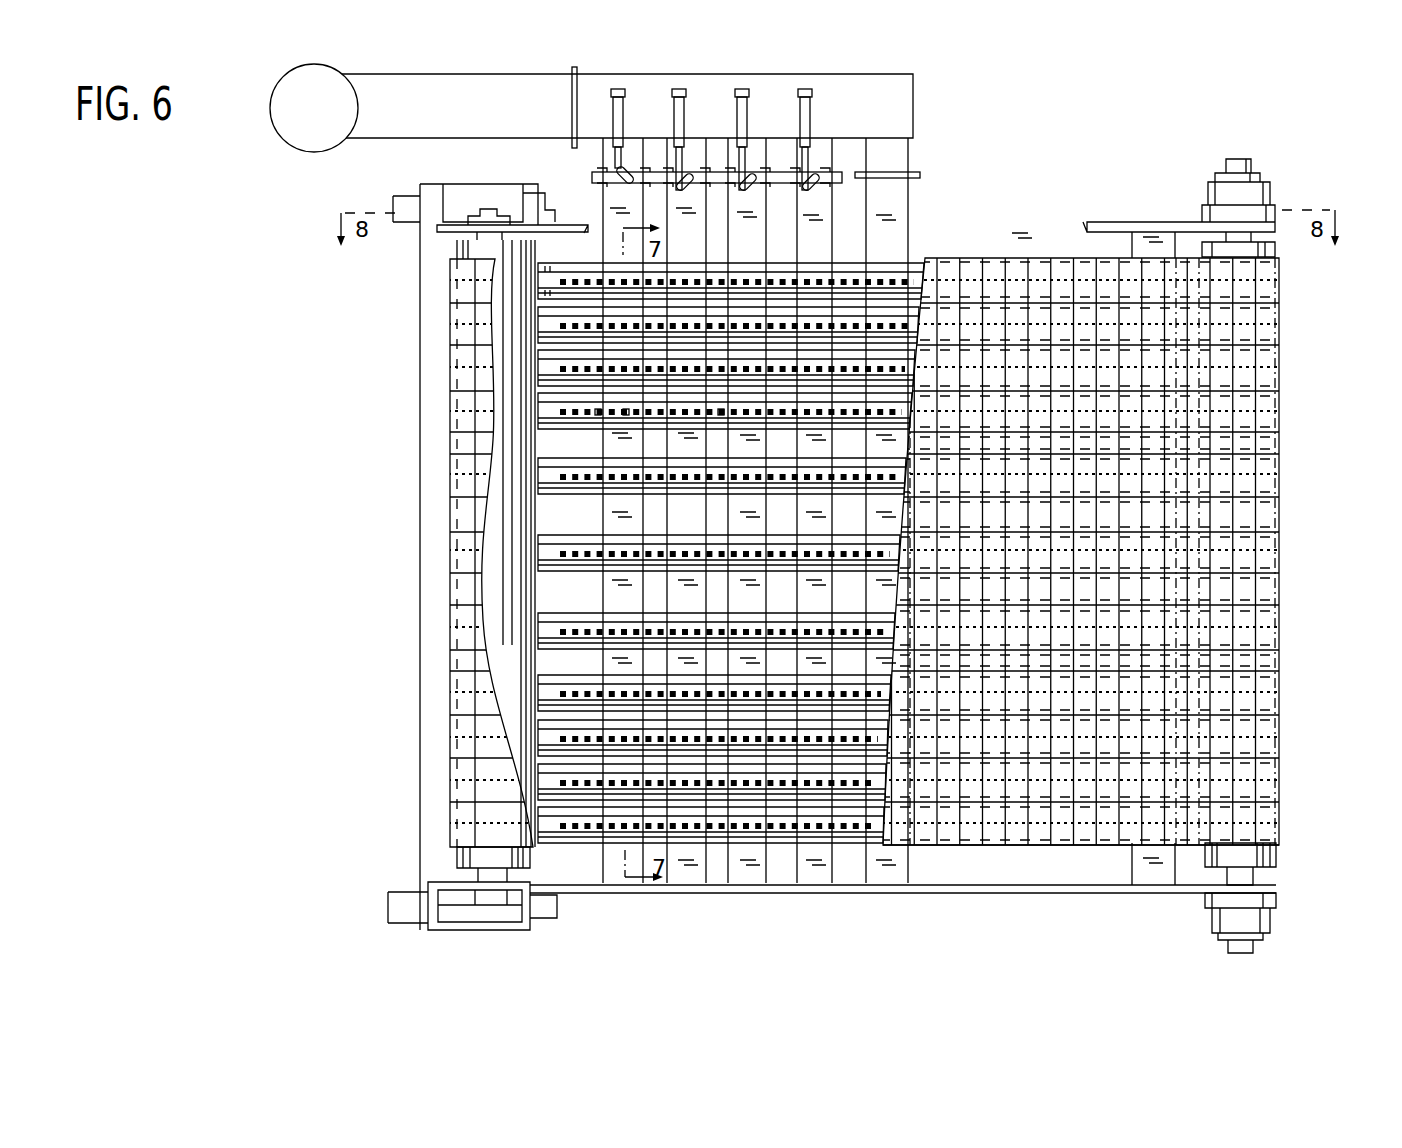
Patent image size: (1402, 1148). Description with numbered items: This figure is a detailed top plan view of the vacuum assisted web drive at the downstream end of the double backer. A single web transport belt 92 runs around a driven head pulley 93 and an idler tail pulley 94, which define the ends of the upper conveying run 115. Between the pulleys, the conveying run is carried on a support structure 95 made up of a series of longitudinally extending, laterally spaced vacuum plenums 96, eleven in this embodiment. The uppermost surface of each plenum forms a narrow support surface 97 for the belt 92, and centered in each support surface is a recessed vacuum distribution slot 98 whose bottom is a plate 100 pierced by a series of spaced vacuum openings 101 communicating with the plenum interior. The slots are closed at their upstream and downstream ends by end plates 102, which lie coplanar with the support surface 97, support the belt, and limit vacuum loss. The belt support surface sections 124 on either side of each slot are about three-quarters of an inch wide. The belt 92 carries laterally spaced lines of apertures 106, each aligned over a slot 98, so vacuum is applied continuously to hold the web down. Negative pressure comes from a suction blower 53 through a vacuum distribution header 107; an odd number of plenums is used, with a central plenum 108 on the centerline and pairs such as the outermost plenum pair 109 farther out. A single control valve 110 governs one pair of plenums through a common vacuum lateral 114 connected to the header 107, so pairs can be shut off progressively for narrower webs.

The suction blower 53 is at (272, 100).
The web transport belt 92 is at (949, 832).
The driven head pulley 93 is at (1266, 868).
The idler tail pulley 94 is at (468, 878).
The support structure 95 is at (793, 900).
The vacuum plenums 96 is at (545, 740).
The support surface 97 is at (858, 290).
The vacuum distribution slot 98 is at (887, 280).
The plate 100 is at (598, 418).
The vacuum openings 101 is at (720, 418).
The end plates 102 is at (540, 412).
The lines of apertures 106 is at (1046, 325).
The vacuum distribution header 107 is at (663, 126).
The central plenum 108 is at (545, 551).
The outermost plenum pair 109 is at (540, 283).
The control valve 110 is at (626, 178).
The vacuum lateral 114 is at (612, 196).
The upper conveying run 115 is at (701, 502).
The belt support surface sections 124 is at (598, 614).